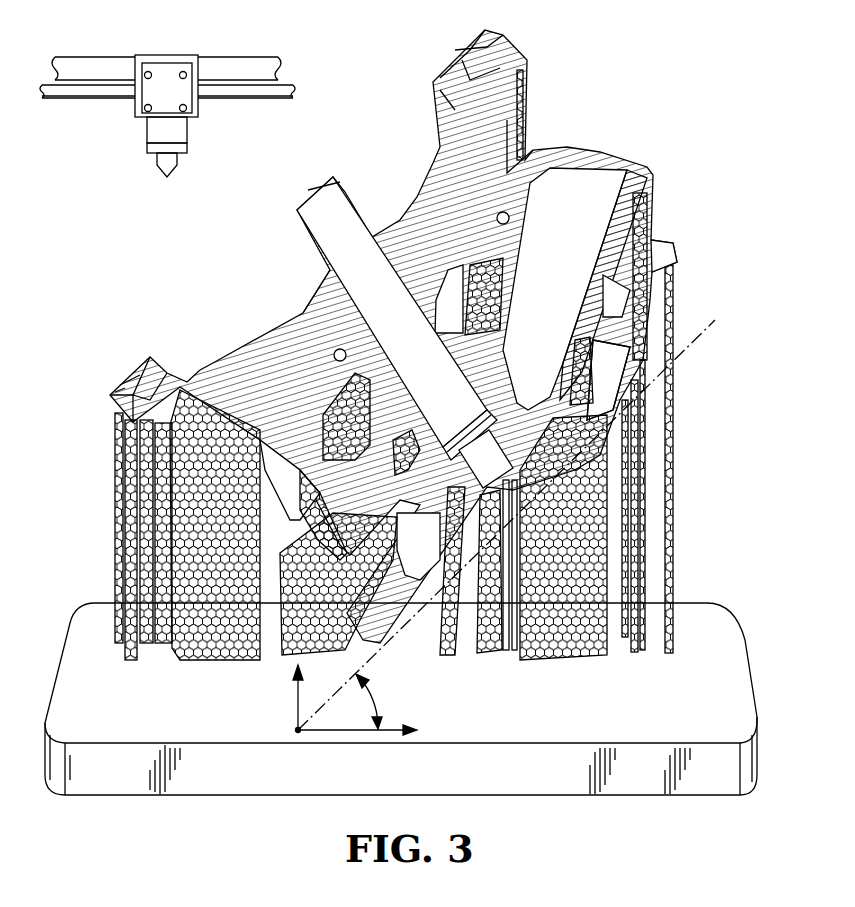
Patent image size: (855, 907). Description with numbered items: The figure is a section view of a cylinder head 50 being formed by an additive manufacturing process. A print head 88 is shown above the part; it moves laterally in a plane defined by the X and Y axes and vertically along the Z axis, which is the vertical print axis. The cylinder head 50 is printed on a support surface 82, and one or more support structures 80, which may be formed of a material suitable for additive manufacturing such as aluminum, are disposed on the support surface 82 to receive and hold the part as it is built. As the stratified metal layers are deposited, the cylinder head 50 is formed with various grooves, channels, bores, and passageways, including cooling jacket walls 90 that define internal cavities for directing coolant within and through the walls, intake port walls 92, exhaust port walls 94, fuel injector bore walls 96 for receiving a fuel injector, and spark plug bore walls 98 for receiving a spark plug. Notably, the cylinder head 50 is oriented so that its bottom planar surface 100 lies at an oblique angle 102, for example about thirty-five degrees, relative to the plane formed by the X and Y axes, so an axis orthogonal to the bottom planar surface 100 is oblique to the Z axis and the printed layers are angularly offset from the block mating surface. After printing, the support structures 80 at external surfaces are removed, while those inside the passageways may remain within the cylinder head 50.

The cylinder head 50 is at (408, 336).
The support structures 80 is at (438, 450).
The support surface 82 is at (730, 675).
The print head 88 is at (145, 135).
The cooling jacket walls 90 is at (275, 425).
The intake port walls 92 is at (573, 250).
The exhaust port walls 94 is at (330, 567).
The fuel injector bore walls 96 is at (628, 392).
The spark plug bore walls 98 is at (362, 317).
The bottom planar surface 100 is at (673, 400).
The oblique angle 102 is at (366, 696).